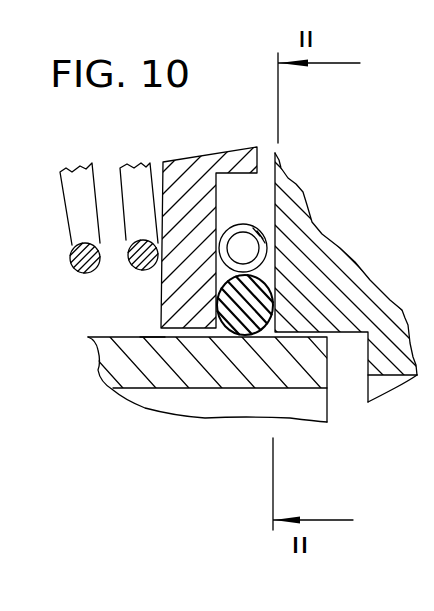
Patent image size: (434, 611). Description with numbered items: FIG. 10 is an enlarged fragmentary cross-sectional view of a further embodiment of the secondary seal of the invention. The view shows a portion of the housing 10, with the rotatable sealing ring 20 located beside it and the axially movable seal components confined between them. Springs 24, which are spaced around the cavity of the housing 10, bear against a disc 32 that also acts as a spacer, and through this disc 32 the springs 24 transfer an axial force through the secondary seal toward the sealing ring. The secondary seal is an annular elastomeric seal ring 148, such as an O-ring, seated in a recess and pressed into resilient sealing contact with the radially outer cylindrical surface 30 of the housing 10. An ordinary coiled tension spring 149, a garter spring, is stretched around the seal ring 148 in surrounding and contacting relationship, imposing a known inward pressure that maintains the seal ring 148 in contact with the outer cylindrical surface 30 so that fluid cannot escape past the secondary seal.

The housing 10 is at (282, 370).
The rotatable sealing ring 20 is at (376, 313).
The springs 24 is at (88, 272).
The radially outer cylindrical surface 30 is at (149, 337).
The disc 32 is at (202, 230).
The elastomeric seal ring 148 is at (298, 303).
The coiled tension spring 149 is at (241, 226).